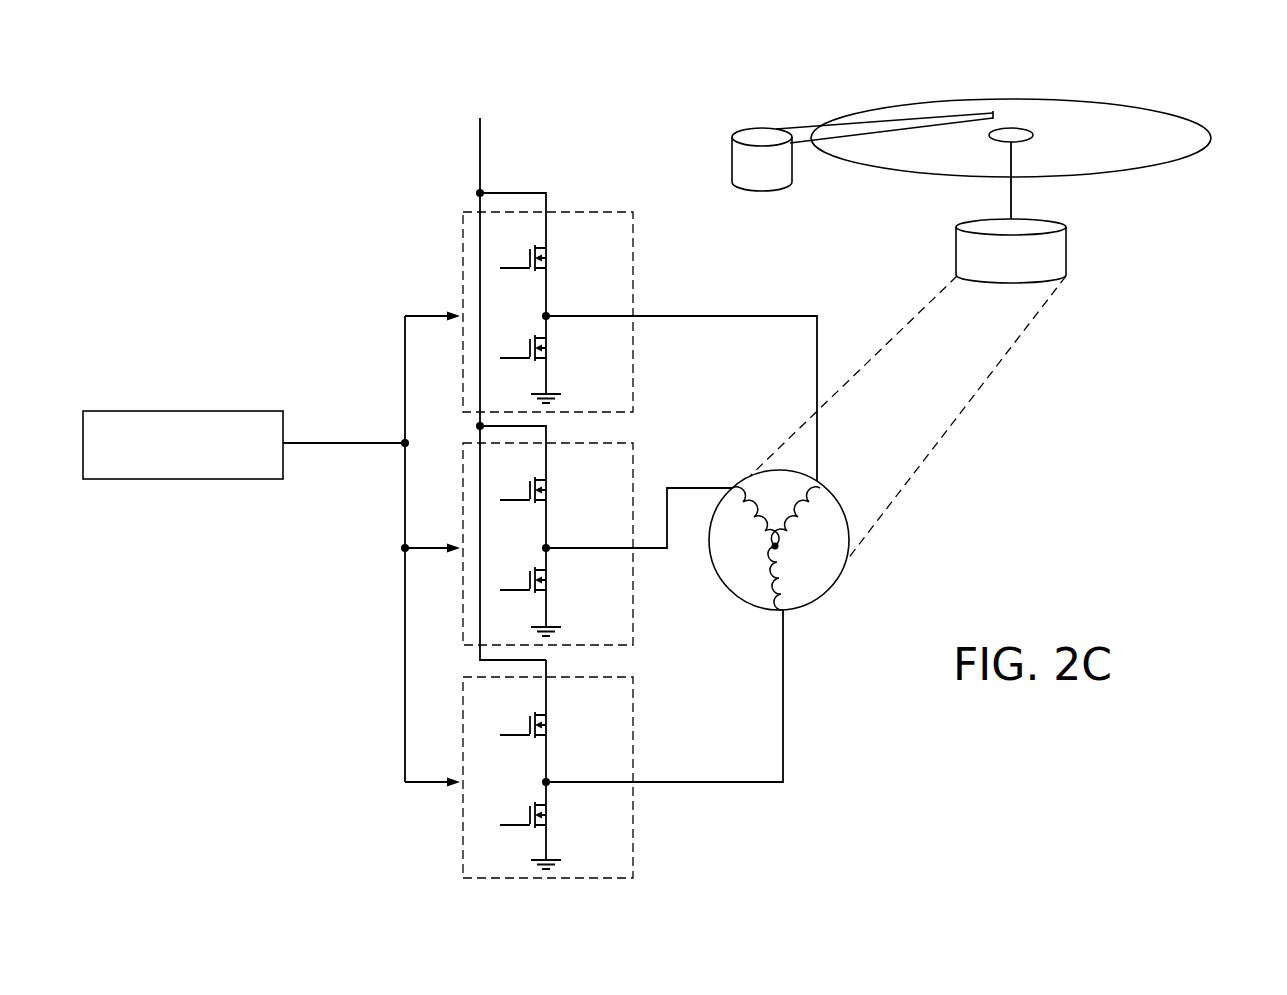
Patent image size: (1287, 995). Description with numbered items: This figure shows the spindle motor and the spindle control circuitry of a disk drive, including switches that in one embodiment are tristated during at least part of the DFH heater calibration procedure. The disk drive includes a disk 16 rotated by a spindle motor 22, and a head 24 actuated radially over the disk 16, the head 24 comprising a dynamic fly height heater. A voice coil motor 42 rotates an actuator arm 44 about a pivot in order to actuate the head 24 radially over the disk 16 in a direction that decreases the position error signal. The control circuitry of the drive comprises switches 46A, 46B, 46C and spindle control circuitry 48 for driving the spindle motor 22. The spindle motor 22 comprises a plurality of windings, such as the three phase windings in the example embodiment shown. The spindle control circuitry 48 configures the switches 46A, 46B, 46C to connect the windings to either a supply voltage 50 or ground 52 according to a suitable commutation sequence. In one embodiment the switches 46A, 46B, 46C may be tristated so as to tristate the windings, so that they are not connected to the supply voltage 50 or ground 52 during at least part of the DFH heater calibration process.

The disk 16 is at (1174, 117).
The spindle motor 22 is at (1067, 250).
The head 24 is at (993, 107).
The voice coil motor (VCM) 42 is at (755, 126).
The actuator arm 44 is at (794, 128).
The switch 46A is at (573, 211).
The switch 46B is at (573, 443).
The switch 46C is at (573, 677).
The spindle control circuitry 48 is at (211, 411).
The supply voltage 50 is at (480, 142).
The ground 52 is at (552, 374).